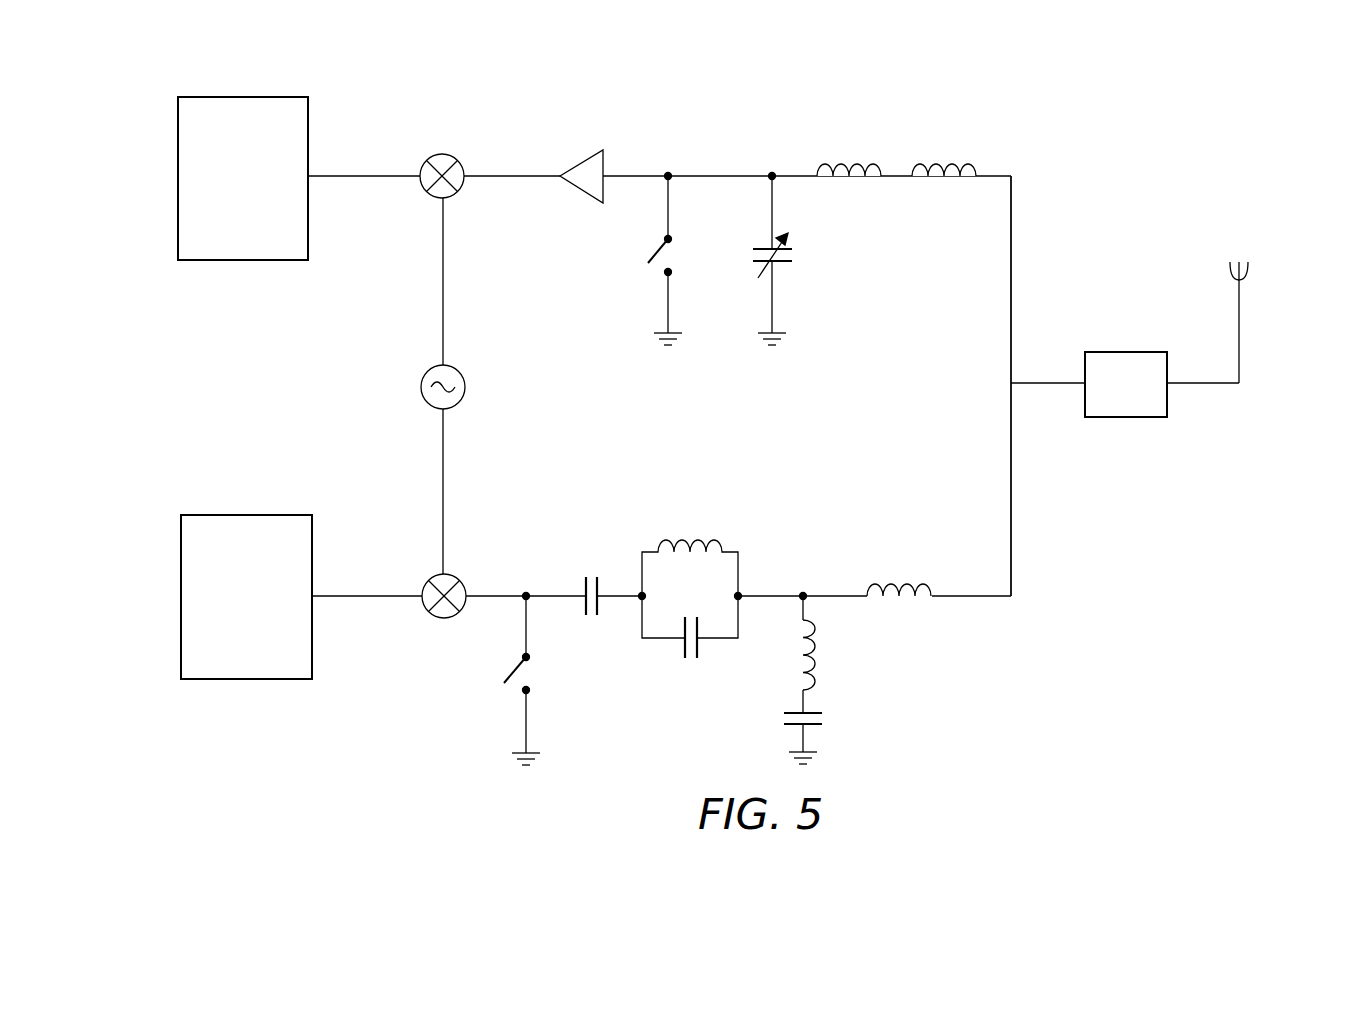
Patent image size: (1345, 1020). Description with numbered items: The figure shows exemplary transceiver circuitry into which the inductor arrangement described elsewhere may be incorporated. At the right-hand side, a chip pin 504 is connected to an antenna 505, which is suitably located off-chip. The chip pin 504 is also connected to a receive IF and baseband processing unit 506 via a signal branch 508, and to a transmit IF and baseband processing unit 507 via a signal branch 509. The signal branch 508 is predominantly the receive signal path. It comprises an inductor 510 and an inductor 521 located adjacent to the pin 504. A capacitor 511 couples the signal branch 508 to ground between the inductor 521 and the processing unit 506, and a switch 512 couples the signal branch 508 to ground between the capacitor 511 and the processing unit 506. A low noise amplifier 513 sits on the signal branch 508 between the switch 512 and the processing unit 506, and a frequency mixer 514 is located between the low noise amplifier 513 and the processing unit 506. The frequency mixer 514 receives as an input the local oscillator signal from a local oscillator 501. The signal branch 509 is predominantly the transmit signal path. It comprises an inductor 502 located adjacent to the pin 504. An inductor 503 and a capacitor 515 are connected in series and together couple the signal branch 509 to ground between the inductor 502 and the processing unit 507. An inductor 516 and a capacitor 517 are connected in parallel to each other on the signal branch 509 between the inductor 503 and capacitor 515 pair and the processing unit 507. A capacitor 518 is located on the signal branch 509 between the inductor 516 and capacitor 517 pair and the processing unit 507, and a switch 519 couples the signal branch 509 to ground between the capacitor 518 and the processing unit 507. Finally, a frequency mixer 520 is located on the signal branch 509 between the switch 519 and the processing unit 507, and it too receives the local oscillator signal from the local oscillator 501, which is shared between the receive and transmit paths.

The local oscillator 501 is at (466, 387).
The inductor 502 is at (906, 583).
The inductor 503 is at (817, 645).
The chip pin 504 is at (1137, 351).
The antenna 505 is at (1250, 266).
The receive IF and baseband processing unit 506 is at (275, 97).
The transmit IF and baseband processing unit 507 is at (280, 515).
The signal branch 508 is at (1012, 210).
The signal branch 509 is at (1012, 555).
The inductor 510 is at (951, 163).
The capacitor 511 is at (795, 255).
The switch 512 is at (654, 253).
The low noise amplifier 513 is at (586, 152).
The frequency mixer 514 is at (439, 154).
The capacitor 515 is at (824, 718).
The inductor 516 is at (695, 538).
The capacitor 517 is at (691, 661).
The capacitor 518 is at (589, 576).
The switch 519 is at (530, 672).
The frequency mixer 520 is at (446, 618).
The inductor 521 is at (854, 163).